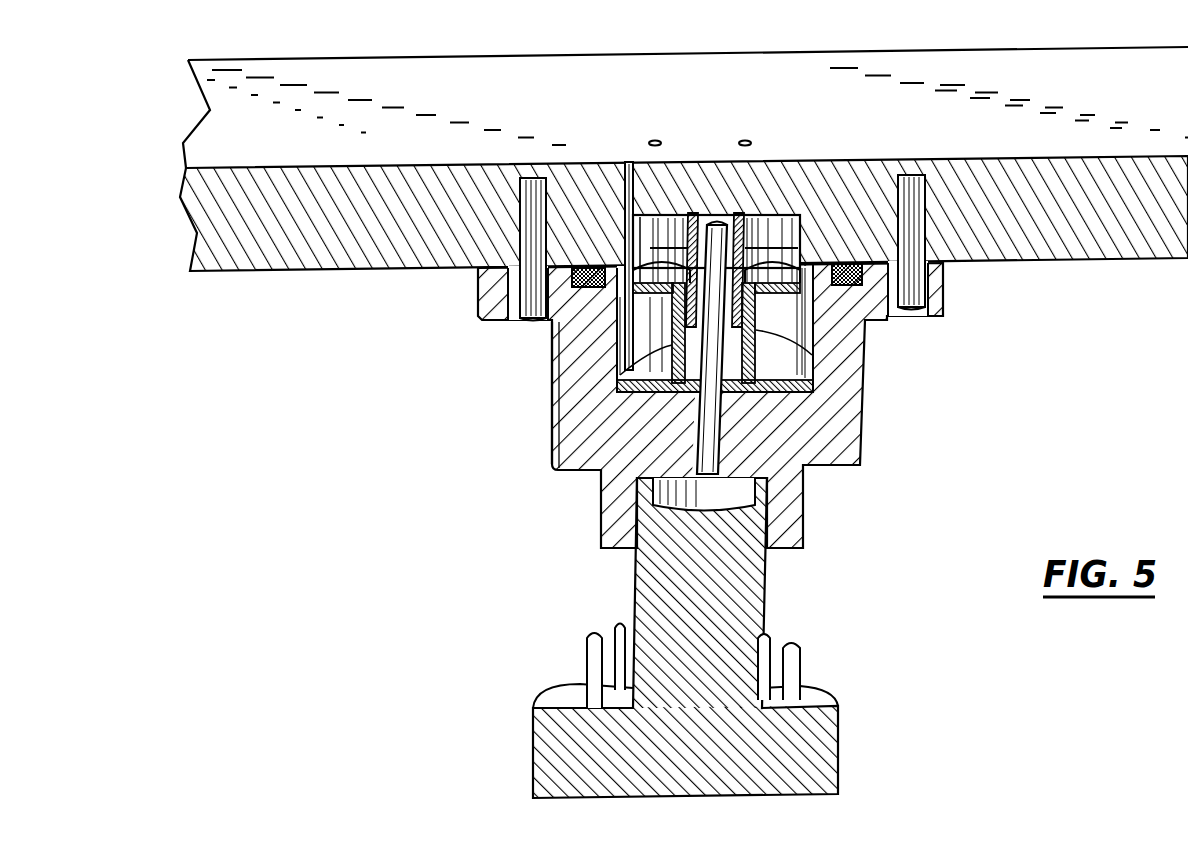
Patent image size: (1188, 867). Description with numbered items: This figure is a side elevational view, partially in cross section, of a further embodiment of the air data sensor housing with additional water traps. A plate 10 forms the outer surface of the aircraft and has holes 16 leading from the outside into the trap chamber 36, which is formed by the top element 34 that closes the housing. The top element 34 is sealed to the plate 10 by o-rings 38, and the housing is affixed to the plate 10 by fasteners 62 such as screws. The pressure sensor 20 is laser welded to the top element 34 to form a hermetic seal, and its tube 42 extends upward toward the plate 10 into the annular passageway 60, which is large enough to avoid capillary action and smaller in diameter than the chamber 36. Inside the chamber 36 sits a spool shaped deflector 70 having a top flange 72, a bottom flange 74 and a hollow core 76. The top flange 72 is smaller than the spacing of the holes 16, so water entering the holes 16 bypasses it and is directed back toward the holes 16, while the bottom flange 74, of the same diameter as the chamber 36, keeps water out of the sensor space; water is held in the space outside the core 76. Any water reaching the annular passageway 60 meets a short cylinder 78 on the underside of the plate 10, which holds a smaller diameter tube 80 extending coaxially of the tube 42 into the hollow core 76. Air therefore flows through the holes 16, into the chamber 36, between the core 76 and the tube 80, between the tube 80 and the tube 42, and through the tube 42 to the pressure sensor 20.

The plate 10 is at (413, 72).
The holes 16 is at (630, 162).
The pressure sensor 20 is at (838, 752).
The top element 34 is at (858, 456).
The trap chamber 36 is at (788, 313).
The o-rings 38 is at (836, 262).
The tube 42 is at (552, 440).
The annular passageway 60 is at (656, 250).
The fasteners 62 is at (905, 318).
The spool shaped deflector 70 is at (650, 352).
The top flange 72 is at (668, 312).
The bottom flange 74 is at (636, 390).
The core 76 is at (736, 380).
The cylinder 78 is at (745, 248).
The tube 80 is at (775, 344).